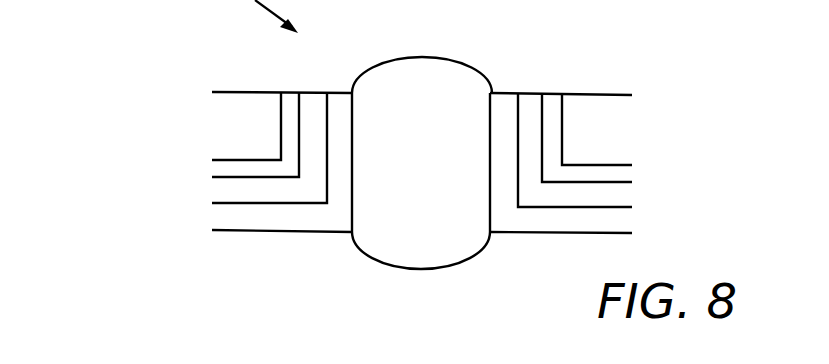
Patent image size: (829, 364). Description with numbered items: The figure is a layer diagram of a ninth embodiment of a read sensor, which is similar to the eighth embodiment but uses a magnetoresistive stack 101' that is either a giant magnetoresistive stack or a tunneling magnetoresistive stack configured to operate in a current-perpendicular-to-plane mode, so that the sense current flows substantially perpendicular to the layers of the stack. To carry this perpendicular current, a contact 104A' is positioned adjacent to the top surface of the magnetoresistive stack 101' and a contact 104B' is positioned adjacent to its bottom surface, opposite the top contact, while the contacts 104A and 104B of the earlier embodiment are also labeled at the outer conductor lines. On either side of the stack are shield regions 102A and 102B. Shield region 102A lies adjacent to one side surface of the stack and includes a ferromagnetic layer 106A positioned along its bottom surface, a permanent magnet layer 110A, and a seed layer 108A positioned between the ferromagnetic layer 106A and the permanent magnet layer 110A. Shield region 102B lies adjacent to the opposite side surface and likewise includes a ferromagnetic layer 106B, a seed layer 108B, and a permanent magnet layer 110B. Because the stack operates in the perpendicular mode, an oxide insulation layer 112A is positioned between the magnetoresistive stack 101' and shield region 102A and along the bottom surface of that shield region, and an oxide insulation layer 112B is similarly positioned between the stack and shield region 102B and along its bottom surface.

The magnetoresistive stack 101' is at (426, 127).
The shield region 102A is at (115, 90).
The shield region 102B is at (726, 97).
The contact 104A is at (238, 77).
The contact 104B is at (599, 82).
The contact 104A' is at (406, 46).
The contact 104B' is at (415, 283).
The ferromagnetic layer 106A is at (238, 185).
The ferromagnetic layer 106B is at (604, 190).
The seed layer 108A is at (228, 168).
The seed layer 108B is at (608, 173).
The permanent magnet layer 110A is at (228, 112).
The permanent magnet layer 110B is at (618, 117).
The oxide insulation layer 112A is at (298, 222).
The oxide insulation layer 112B is at (543, 224).